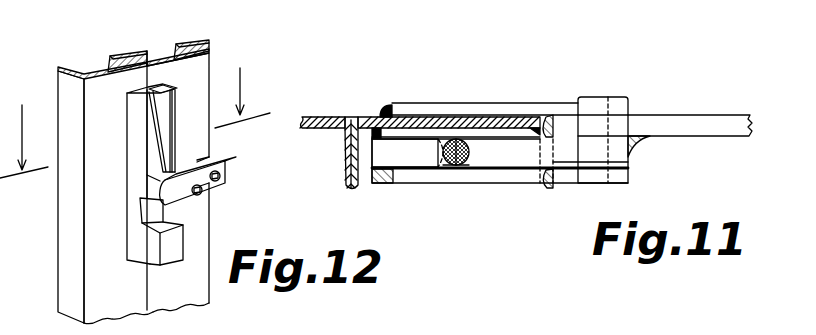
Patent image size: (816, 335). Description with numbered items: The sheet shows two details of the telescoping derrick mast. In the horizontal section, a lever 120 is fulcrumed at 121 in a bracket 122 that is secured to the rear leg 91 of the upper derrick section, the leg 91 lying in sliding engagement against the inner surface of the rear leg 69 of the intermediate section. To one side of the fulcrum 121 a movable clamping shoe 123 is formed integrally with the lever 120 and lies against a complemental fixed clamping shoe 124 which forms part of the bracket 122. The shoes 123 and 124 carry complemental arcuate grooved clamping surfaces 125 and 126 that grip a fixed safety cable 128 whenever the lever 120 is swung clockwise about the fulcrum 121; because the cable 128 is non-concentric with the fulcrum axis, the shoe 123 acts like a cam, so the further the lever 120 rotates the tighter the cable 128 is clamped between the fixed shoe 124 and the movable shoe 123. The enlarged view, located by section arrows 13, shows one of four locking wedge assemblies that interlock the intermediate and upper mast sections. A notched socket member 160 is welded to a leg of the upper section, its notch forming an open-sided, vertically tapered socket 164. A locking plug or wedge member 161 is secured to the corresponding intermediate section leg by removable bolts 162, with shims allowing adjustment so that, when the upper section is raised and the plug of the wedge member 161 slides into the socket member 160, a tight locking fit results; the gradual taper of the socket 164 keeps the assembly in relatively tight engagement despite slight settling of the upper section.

In FIG. 12, the section line 13- 13 is at (135, 123).
In FIG. 12, the rear leg of intermediate section 69 is at (185, 50).
In FIG. 11, the rear leg of intermediate section 69 is at (326, 128).
In FIG. 12, the rear leg 91 is at (102, 70).
In FIG. 11, the rear leg 91 is at (376, 118).
In FIG. 11, the lever 120 is at (664, 124).
In FIG. 11, the fulcrum 121 is at (597, 99).
In FIG. 11, the bracket 122 is at (493, 112).
In FIG. 11, the movable clamping shoe 123 is at (527, 158).
In FIG. 11, the fixed clamping shoe 124 is at (403, 157).
In FIG. 11, the arcuate grooved clamping surface 125 is at (463, 167).
In FIG. 11, the arcuate grooved clamping surface 126 is at (455, 167).
In FIG. 11, the safety cable 128 is at (456, 139).
In FIG. 12, the notched socket member 160 is at (135, 168).
In FIG. 12, the wedge member 161 is at (185, 198).
In FIG. 12, the bolts 162 is at (203, 188).
In FIG. 12, the socket 164 is at (167, 100).